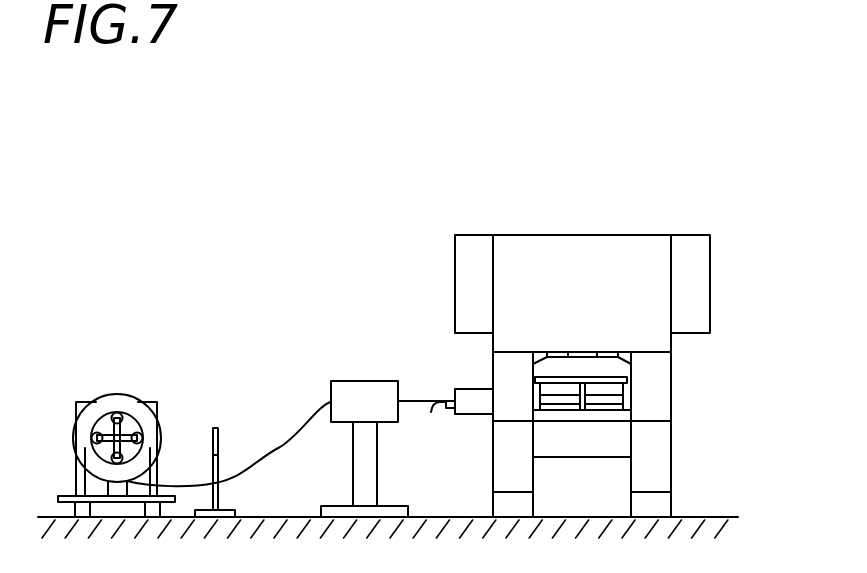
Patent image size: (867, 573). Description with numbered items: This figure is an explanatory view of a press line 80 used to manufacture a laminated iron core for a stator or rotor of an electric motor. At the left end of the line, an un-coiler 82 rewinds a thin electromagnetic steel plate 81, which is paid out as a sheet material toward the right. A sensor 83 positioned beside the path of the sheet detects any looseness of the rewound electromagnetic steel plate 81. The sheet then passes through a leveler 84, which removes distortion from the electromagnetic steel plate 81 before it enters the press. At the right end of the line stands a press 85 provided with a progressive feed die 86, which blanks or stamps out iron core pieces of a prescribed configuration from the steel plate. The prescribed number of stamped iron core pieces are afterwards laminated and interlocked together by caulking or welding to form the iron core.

The press line 80 is at (604, 304).
The electromagnetic steel plate 81 is at (292, 432).
The un-coiler 82 is at (118, 385).
The sensor 83 is at (213, 413).
The leveler 84 is at (365, 370).
The press 85 is at (695, 227).
The progressive feed die 86 is at (627, 405).